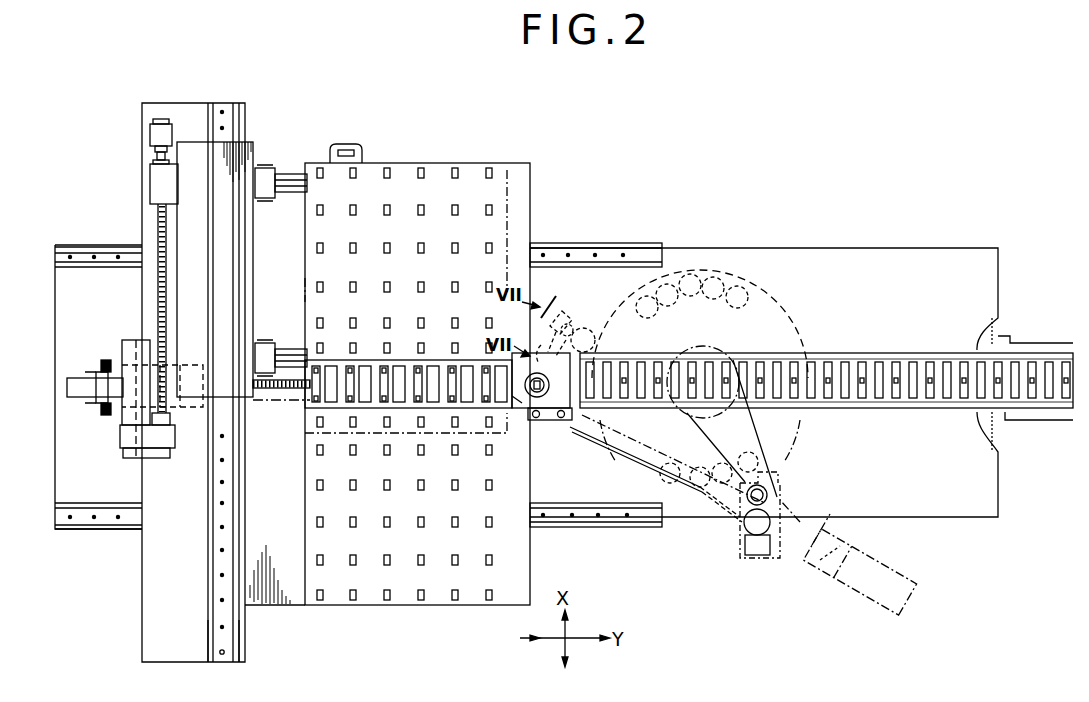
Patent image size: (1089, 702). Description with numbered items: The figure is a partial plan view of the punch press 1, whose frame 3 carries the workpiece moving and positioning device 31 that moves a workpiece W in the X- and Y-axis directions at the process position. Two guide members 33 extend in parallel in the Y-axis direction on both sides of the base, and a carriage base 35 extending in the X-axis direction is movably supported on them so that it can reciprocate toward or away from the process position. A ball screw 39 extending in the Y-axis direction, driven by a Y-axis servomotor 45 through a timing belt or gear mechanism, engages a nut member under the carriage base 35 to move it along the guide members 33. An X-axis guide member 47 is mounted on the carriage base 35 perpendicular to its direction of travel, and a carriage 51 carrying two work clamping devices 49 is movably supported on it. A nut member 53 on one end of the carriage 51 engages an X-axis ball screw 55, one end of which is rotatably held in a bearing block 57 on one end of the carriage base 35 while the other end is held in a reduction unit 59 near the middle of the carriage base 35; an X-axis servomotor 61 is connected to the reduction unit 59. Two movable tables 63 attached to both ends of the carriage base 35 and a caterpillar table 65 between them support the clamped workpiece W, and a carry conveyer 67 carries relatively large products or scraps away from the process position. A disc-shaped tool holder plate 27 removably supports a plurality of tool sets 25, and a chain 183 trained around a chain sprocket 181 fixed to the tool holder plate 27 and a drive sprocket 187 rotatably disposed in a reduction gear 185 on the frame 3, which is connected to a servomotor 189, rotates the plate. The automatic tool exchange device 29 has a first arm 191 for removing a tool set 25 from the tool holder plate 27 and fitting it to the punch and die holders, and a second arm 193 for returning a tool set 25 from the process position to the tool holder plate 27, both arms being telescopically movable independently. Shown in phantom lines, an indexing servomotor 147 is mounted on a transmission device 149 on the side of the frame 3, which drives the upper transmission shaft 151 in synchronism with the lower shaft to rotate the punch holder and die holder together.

The punch press 1 is at (846, 226).
The frame 3 is at (886, 248).
The tool sets 25 is at (730, 280).
The tool holder plate 27 is at (752, 293).
The automatic tool exchange device 29 is at (559, 322).
The workpiece moving and positioning device 31 is at (258, 132).
The guide members 33 is at (584, 250).
The carriage base 35 is at (194, 579).
The ball screw 39 is at (262, 392).
The Y-axis servomotor 45 is at (205, 366).
The X-axis guide member 47 is at (222, 640).
The work clamping devices 49 is at (290, 164).
The carriage 51 is at (221, 195).
The nut member 53 is at (150, 185).
The ball screw 55 is at (158, 222).
The bearing block 57 is at (152, 138).
The reduction unit 59 is at (170, 443).
The X-axis servomotor 61 is at (125, 350).
The movable tables 63 is at (378, 163).
The caterpillar table 65 is at (362, 362).
The carry conveyer 67 is at (896, 355).
The indexing servomotor 147 is at (856, 550).
The transmission device 149 is at (816, 560).
The upper transmission shaft 151 is at (620, 442).
The chain sprocket 181 is at (704, 346).
The chain 183 is at (762, 440).
The reduction gear 185 is at (780, 486).
The drive sprocket 187 is at (780, 500).
The servomotor 189 is at (738, 556).
The first arm 191 is at (584, 328).
The second arm 193 is at (560, 322).
The workpiece W is at (508, 176).